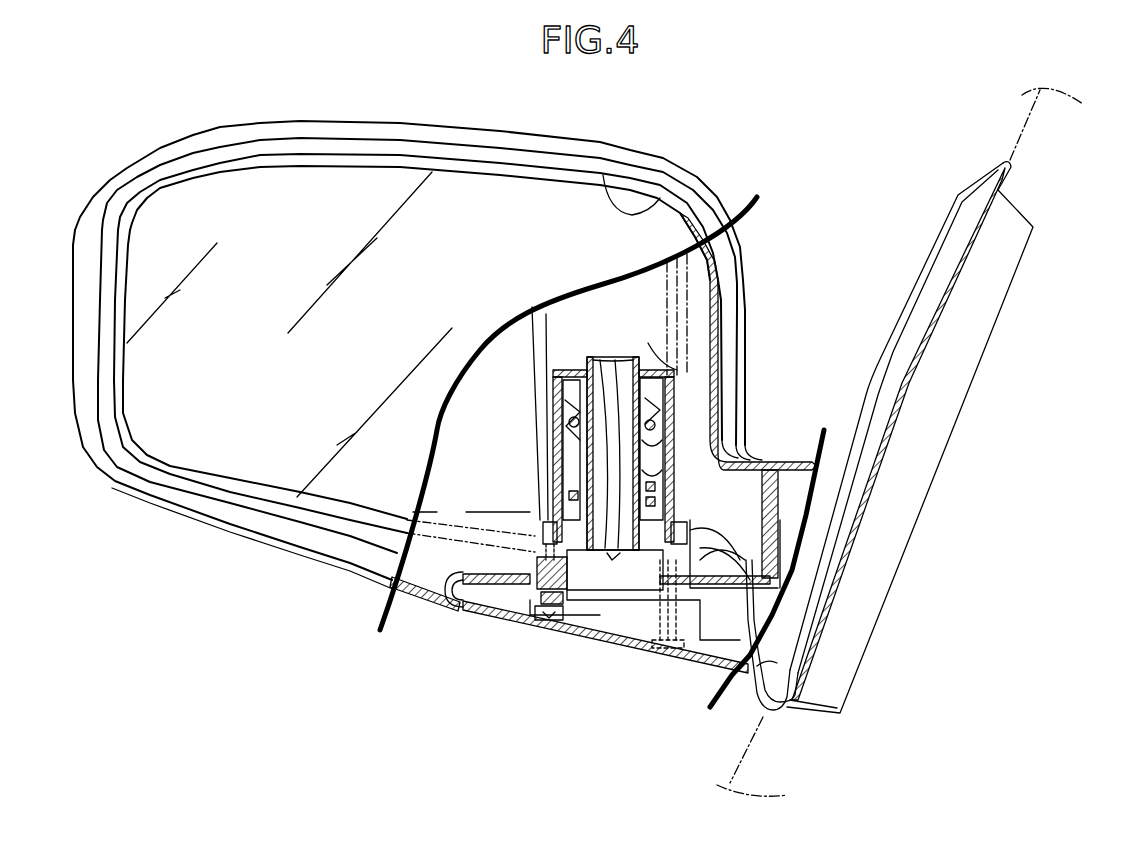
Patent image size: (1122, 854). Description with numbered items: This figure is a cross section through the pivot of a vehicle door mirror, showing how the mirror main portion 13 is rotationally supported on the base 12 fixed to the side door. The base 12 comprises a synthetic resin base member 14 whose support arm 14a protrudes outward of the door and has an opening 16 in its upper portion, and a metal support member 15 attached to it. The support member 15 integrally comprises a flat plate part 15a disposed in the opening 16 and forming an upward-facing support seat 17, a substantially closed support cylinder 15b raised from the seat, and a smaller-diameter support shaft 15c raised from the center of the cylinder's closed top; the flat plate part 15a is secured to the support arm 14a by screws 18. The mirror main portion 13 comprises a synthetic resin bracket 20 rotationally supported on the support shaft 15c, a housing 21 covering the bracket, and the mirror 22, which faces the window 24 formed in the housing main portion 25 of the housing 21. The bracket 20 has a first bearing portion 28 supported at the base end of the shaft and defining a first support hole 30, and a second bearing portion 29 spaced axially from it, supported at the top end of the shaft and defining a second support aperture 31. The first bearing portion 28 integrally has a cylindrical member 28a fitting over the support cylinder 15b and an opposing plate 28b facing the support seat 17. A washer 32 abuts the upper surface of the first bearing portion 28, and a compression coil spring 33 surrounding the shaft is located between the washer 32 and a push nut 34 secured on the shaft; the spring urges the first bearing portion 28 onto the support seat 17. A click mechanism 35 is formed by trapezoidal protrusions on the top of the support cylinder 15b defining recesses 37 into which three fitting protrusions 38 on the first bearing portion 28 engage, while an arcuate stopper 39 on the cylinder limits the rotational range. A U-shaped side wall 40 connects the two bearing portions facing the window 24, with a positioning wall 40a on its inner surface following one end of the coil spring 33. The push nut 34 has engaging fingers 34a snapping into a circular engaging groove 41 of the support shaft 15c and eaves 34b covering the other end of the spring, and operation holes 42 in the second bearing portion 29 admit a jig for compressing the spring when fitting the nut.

The base 12 is at (918, 250).
The mirror main portion 13 is at (682, 155).
The base member 14 is at (907, 318).
The support arm 14a is at (598, 637).
The support member 15 is at (490, 612).
The flat plate part 15a is at (513, 612).
The support cylinder 15b is at (697, 587).
The support shaft 15c is at (585, 375).
The opening 16 is at (760, 600).
The support seat 17 is at (490, 570).
The screws 18 is at (556, 620).
The bracket 20 is at (533, 313).
The housing 21 is at (745, 263).
The mirror 22 is at (487, 207).
The window 24 is at (663, 198).
The housing main portion 25 is at (723, 376).
The first bearing portion 28 is at (553, 503).
The cylindrical member 28a is at (750, 470).
The opposing plate 28b is at (782, 559).
The second bearing portion 29 is at (685, 355).
The first support hole 30 is at (666, 477).
The second support aperture 31 is at (621, 360).
The washer 32 is at (569, 495).
The compression coil spring 33 is at (556, 449).
The push nut 34 is at (660, 432).
The engaging fingers 34a is at (587, 413).
The eaves 34b is at (568, 422).
The click mechanism 35 is at (780, 520).
The recesses 37 is at (675, 522).
The fitting protrusions 38 is at (615, 571).
The arcuate stopper 39 is at (527, 570).
The side wall 40 is at (665, 452).
The positioning wall 40a is at (600, 360).
The circular engaging groove 41 is at (730, 351).
The operation holes 42 is at (648, 343).